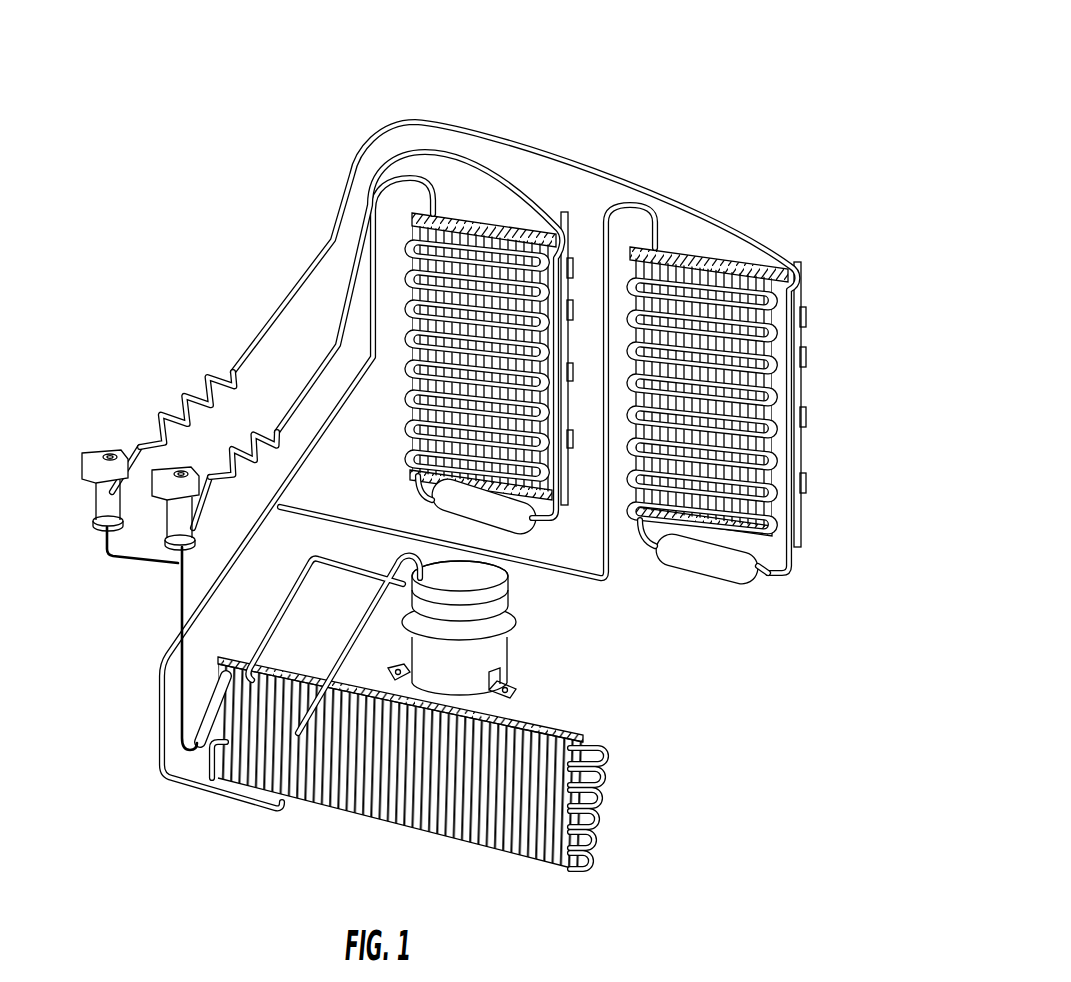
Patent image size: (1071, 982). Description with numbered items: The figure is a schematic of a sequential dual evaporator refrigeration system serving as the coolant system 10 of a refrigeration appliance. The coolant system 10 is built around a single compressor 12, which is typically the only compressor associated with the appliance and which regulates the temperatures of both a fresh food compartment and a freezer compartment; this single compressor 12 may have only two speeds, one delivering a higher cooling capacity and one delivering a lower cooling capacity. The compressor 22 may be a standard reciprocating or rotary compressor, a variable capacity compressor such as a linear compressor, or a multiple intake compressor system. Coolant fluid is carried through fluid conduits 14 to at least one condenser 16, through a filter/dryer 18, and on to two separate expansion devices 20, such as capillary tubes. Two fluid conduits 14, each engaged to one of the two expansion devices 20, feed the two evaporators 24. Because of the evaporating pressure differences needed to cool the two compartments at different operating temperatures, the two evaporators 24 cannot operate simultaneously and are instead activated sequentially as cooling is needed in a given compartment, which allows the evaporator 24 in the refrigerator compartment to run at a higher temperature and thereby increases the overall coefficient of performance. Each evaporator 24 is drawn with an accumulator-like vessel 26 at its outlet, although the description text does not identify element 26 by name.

The coolant system 10 is at (419, 473).
The single compressor 12 is at (470, 683).
The fluid conduits 14 is at (267, 317).
The condenser 16 is at (455, 852).
The filter/dryer 18 is at (203, 716).
The expansion devices 20 is at (160, 428).
The compressor 22 is at (87, 467).
The evaporators 24 is at (468, 228).
The accumulator 26 is at (493, 519).